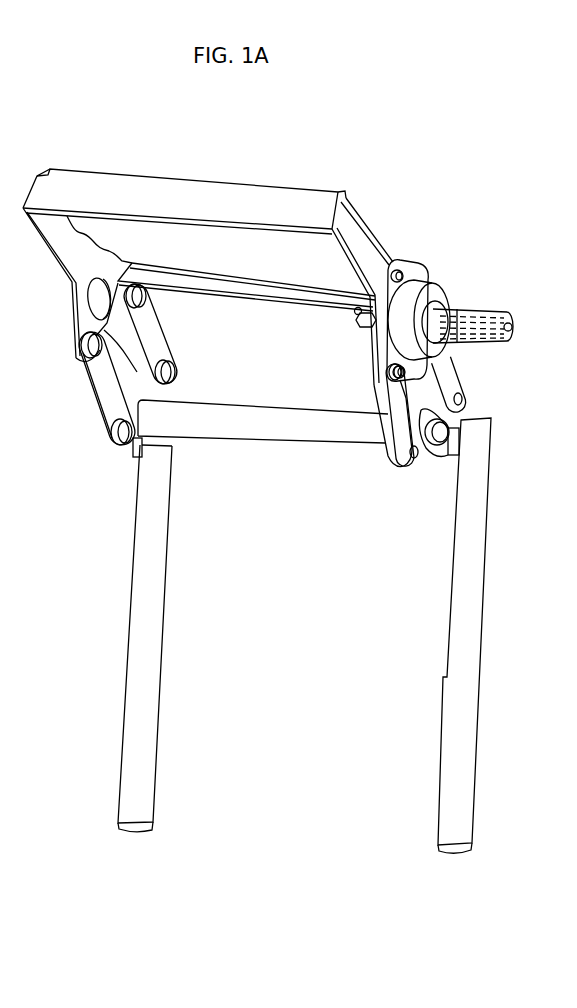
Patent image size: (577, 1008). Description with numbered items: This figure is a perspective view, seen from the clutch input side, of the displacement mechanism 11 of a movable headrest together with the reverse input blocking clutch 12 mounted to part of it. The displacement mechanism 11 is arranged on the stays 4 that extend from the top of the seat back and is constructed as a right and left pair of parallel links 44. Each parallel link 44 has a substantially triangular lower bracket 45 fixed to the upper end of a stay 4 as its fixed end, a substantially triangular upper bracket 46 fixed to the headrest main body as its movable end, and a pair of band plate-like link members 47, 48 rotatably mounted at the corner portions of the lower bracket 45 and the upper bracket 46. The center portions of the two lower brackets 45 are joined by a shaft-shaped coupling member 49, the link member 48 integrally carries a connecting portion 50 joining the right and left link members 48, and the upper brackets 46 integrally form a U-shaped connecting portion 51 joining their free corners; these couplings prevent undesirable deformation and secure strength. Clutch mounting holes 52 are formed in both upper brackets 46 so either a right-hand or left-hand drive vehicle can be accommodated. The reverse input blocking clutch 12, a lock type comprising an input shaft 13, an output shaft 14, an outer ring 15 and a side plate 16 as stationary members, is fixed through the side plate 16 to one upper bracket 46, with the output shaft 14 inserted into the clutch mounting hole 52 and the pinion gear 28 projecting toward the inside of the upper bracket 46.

The stays 4 is at (137, 678).
The displacement mechanism 11 is at (110, 147).
The reverse input blocking clutch 12 is at (515, 297).
The input shaft 13 is at (473, 308).
The output shaft 14 is at (357, 310).
The outer ring 15 is at (437, 283).
The side plate 16 is at (397, 263).
The pinion gear 28 is at (360, 322).
The parallel links 44 is at (82, 397).
The lower brackets 45 is at (168, 446).
The upper brackets 46 is at (82, 313).
The link member 47 is at (105, 402).
The link member 48 is at (150, 336).
The coupling member 49 is at (290, 424).
The connecting portion 50 is at (265, 282).
The U-shaped connecting portion 51 is at (252, 198).
The clutch mounting hole 52 is at (97, 295).